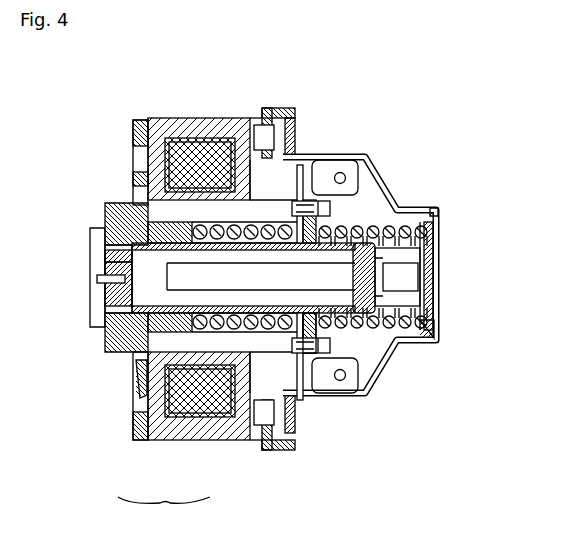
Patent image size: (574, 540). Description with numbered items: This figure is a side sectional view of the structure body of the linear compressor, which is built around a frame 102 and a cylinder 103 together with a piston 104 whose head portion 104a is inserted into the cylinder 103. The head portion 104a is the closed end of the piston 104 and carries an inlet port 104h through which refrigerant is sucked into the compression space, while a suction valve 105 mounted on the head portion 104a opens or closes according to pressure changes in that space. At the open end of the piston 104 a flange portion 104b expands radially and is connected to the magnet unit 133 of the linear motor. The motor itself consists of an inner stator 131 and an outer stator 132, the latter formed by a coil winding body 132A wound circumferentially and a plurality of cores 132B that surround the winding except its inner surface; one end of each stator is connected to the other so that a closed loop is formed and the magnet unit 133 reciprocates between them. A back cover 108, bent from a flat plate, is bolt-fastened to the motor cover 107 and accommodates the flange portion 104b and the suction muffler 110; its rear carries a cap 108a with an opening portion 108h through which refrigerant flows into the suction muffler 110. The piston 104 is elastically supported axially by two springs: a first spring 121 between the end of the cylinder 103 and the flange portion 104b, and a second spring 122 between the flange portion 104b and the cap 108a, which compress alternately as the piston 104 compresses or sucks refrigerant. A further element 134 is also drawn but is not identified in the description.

The frame 102 is at (146, 136).
The cylinder 103 is at (110, 205).
The piston 104 is at (100, 236).
The head portion 104a is at (105, 290).
The flange portion 104b is at (302, 225).
The inlet port 104h is at (105, 256).
The suction valve 105 is at (105, 302).
The motor cover 107 is at (262, 108).
The back cover 108 is at (400, 188).
The cap 108a is at (434, 212).
The opening portion 108h is at (428, 273).
The suction muffler 110 is at (427, 328).
The first spring 121 is at (292, 200).
The second spring 122 is at (358, 238).
The inner stator 131 is at (147, 378).
The outer stator 132 is at (164, 510).
The coil winding body 132A is at (180, 412).
The core 132B is at (215, 428).
The magnet unit 133 is at (270, 440).
The bolt block 134 is at (318, 356).